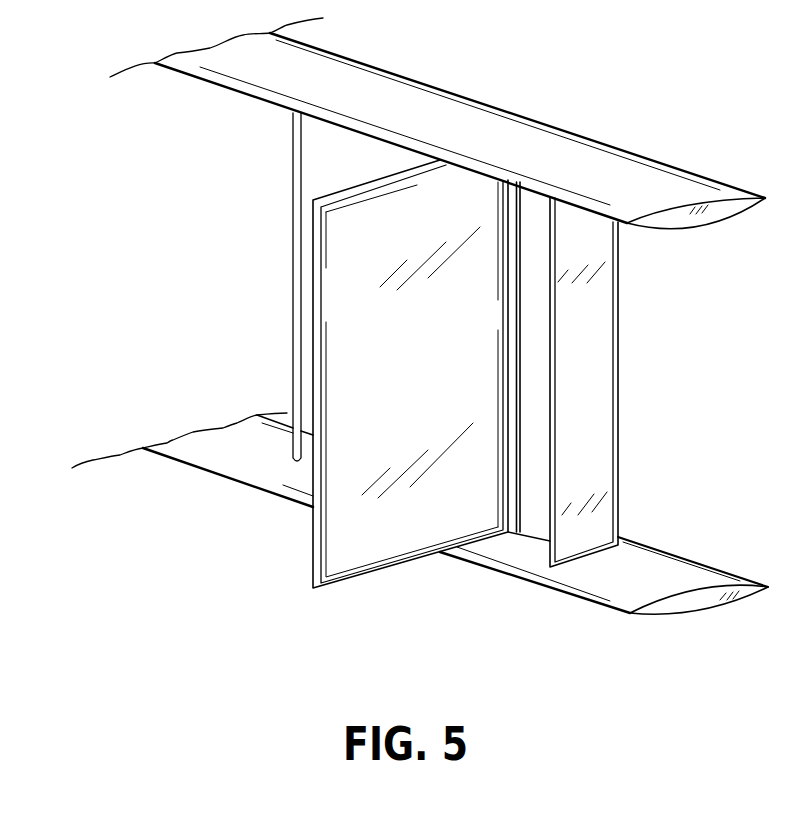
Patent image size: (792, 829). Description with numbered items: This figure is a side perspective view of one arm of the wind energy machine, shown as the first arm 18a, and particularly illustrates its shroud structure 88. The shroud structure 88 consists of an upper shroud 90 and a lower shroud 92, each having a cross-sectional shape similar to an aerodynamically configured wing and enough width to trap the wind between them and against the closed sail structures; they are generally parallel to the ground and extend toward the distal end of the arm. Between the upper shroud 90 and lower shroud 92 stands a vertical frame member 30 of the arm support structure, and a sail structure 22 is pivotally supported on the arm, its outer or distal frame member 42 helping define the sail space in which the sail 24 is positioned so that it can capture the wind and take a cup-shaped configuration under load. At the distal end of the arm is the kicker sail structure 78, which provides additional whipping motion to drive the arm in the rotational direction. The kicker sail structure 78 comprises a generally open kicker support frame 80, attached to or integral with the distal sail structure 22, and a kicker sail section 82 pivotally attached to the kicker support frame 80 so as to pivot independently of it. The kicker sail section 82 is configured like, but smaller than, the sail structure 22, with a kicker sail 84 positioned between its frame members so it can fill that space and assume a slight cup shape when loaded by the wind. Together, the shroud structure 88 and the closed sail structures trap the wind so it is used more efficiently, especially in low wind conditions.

The first arm 18a is at (420, 558).
The sail structure 22 is at (352, 402).
The sail 24 is at (388, 543).
The vertical frame member 30 is at (297, 230).
The outer or distal frame member 42 is at (250, 470).
The kicker sail structure 78 is at (637, 382).
The kicker support frame 80 is at (532, 538).
The kicker sail section 82 is at (590, 373).
The kicker sail 84 is at (597, 450).
The shroud structure 88 is at (437, 121).
The upper shroud 90 is at (350, 80).
The lower shroud 92 is at (593, 578).